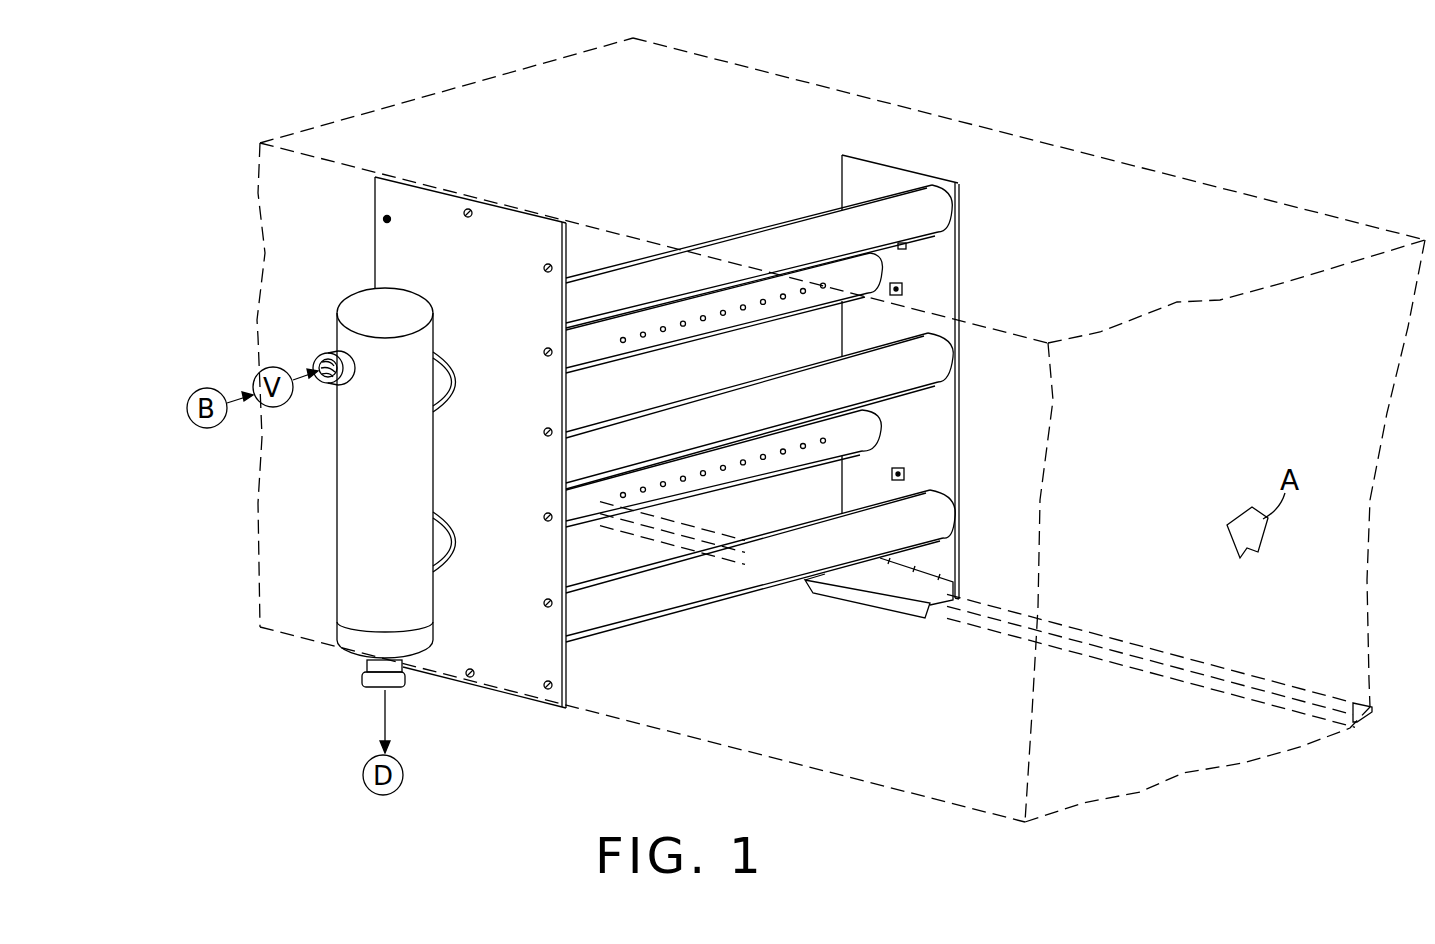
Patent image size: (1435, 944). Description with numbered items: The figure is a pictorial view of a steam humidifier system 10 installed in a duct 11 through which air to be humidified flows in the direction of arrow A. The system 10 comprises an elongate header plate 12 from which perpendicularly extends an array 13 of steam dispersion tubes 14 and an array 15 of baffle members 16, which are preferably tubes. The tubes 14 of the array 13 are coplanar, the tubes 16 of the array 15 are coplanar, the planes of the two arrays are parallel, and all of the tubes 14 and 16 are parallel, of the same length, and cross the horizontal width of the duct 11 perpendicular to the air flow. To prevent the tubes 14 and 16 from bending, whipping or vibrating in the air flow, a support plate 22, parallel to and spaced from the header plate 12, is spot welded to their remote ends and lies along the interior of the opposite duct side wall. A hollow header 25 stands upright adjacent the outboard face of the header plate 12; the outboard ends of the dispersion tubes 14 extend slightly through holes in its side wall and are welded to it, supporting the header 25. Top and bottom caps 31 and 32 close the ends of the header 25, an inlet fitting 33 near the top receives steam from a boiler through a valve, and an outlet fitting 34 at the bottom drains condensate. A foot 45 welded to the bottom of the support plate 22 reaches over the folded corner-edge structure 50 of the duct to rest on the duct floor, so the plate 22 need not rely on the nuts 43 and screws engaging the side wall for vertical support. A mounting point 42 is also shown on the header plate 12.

The steam humidifier system 10 is at (235, 199).
The duct 11 is at (1083, 153).
The header plate 12 is at (516, 678).
The array of steam dispersion tubes 13 is at (665, 505).
The steam dispersion tubes 14 is at (740, 470).
The array of baffle members 15 is at (756, 592).
The baffle members 16 is at (707, 590).
The support plate 22 is at (884, 177).
The header 25 is at (348, 654).
The top cap 31 is at (400, 330).
The bottom cap 32 is at (383, 645).
The inlet fitting 33 is at (325, 352).
The outlet fitting 34 is at (370, 683).
The mounting point 42 is at (383, 219).
The nuts 43 is at (908, 466).
The foot 45 is at (843, 600).
The folded corner-edge structure 50 is at (1245, 697).